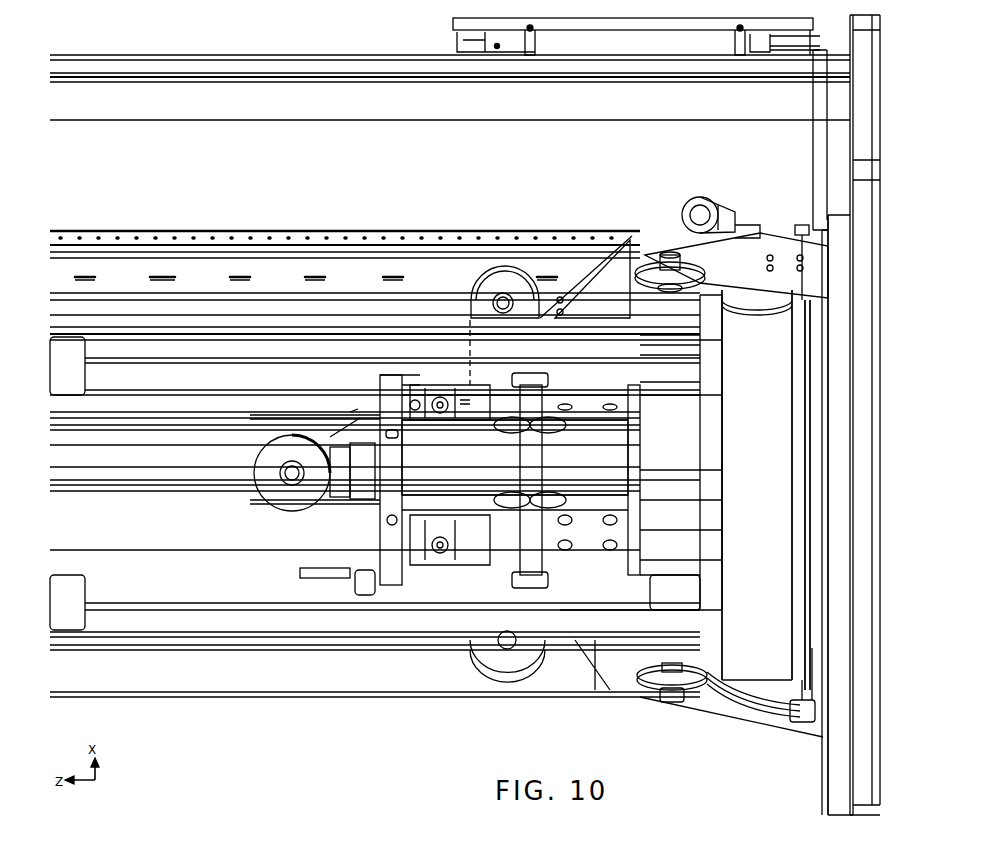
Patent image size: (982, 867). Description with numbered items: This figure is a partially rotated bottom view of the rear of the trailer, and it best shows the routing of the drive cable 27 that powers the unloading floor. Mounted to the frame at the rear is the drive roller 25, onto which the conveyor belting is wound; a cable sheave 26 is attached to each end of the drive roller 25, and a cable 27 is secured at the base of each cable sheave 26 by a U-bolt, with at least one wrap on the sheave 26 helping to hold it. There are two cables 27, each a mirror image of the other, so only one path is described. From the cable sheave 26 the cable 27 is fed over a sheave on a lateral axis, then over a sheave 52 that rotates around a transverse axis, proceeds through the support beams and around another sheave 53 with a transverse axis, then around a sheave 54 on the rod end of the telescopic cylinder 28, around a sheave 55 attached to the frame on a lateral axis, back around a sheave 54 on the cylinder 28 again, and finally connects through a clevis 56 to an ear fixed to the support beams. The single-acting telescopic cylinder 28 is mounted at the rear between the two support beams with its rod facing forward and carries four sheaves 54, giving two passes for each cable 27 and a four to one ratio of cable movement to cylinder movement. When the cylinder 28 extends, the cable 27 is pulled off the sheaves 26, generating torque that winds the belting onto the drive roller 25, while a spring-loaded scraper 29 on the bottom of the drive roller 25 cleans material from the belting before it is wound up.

The drive roller 25 is at (775, 453).
The cable sheave 26 is at (760, 290).
The cable 27 is at (705, 295).
The telescopic cylinder 28 is at (583, 475).
The scraper 29 is at (813, 548).
The sheave 52 is at (500, 290).
The sheave 53 is at (427, 423).
The sheave 54 is at (277, 497).
The sheave 55 is at (512, 510).
The clevis 56 is at (410, 407).